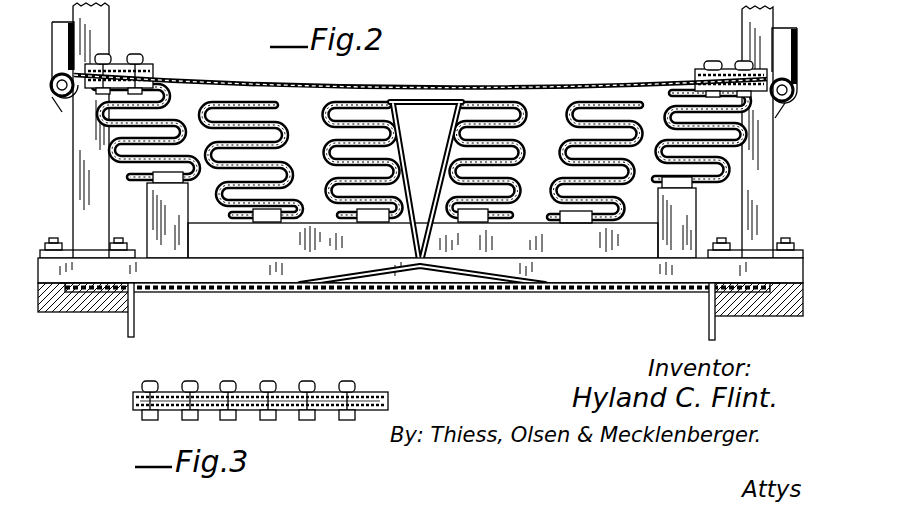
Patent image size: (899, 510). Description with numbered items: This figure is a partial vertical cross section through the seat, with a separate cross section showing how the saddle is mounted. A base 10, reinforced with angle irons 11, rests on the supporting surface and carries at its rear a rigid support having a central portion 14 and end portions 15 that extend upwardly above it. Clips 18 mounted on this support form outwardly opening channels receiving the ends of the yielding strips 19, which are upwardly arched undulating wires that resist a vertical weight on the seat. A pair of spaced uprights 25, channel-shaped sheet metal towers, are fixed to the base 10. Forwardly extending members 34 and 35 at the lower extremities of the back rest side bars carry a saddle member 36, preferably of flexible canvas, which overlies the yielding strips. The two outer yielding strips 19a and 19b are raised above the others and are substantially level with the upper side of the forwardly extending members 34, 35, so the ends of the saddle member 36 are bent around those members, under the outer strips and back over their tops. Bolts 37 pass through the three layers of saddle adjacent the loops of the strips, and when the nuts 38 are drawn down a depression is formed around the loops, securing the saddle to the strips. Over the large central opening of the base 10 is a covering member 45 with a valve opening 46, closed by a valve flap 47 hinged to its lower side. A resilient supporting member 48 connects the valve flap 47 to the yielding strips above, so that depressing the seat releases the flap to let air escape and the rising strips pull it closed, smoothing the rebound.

In FIG. 2, the base 10 is at (62, 344).
In FIG. 2, the angle irons 11 is at (134, 323).
In FIG. 2, the central portion 14 is at (500, 240).
In FIG. 2, the end portions 15 is at (176, 247).
In FIG. 2, the clips 18 is at (272, 223).
In FIG. 2, the yielding strips 19 is at (228, 103).
In FIG. 2, the outer yielding strip 19a is at (772, 108).
In FIG. 2, the outer yielding strip 19b is at (160, 82).
In FIG. 3, the outer yielding strip 19b is at (210, 390).
In FIG. 2, the uprights 25 is at (75, 171).
In FIG. 2, the forwardly extending member 34 is at (57, 93).
In FIG. 2, the forwardly extending member 35 is at (796, 92).
In FIG. 2, the saddle member 36 is at (394, 86).
In FIG. 3, the saddle member 36 is at (250, 392).
In FIG. 2, the bolts 37 is at (118, 66).
In FIG. 3, the bolts 37 is at (275, 386).
In FIG. 2, the nuts 38 is at (100, 84).
In FIG. 3, the nuts 38 is at (343, 415).
In FIG. 2, the covering member 45 is at (262, 284).
In FIG. 2, the valve opening 46 is at (560, 283).
In FIG. 2, the valve flap 47 is at (462, 291).
In FIG. 2, the resilient supporting member 48 is at (458, 100).